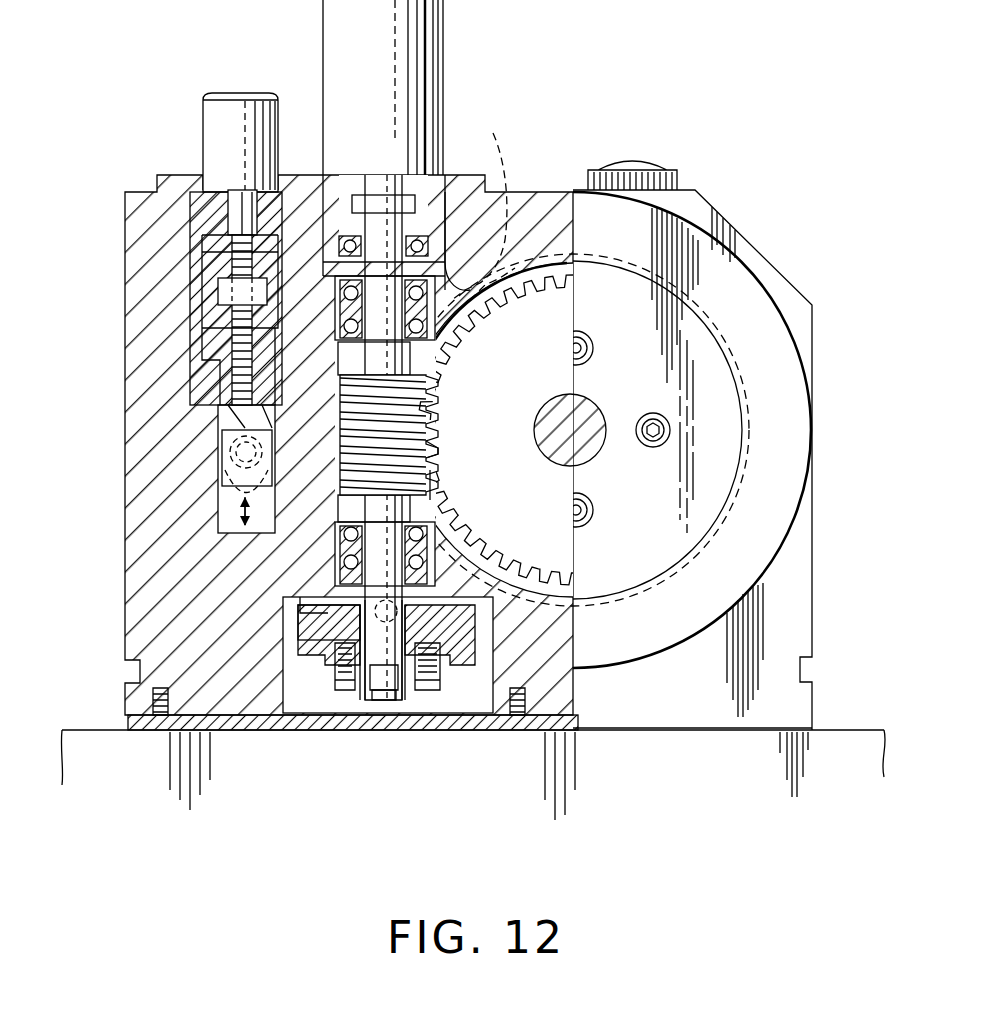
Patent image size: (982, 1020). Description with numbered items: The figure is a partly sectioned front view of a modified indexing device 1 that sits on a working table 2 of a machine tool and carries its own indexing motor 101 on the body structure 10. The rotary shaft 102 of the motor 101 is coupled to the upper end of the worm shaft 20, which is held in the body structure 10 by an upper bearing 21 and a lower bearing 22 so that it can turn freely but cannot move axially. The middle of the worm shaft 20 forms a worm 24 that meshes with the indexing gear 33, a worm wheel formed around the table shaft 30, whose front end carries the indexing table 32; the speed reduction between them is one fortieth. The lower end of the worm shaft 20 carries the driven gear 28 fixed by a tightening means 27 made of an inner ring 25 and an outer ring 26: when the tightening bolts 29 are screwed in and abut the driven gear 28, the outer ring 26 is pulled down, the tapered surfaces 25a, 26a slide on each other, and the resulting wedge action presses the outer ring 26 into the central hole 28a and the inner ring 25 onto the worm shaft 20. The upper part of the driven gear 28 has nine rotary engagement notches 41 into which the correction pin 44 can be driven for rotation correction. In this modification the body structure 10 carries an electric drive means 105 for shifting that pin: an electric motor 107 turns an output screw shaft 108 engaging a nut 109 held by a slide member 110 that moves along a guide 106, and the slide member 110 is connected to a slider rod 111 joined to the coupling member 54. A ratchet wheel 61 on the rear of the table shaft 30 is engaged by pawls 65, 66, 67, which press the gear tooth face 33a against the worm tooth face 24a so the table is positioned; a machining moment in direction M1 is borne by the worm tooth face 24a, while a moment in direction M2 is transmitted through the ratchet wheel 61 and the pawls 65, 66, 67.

The indexing device 1 is at (604, 417).
The working table 2 is at (850, 728).
The body structure 10 is at (135, 382).
The worm shaft 20 is at (455, 486).
The upper bearing 21 is at (436, 262).
The lower bearing 22 is at (436, 562).
The worm 24 is at (430, 377).
The worm tooth face 24a is at (430, 455).
The inner ring 25 is at (378, 668).
The tapered surface 25a is at (443, 752).
The outer ring 26 is at (338, 662).
The tapered surface 26a is at (387, 700).
The tightening means 27 is at (378, 777).
The driven gear 28 is at (413, 711).
The central hole 28a is at (390, 672).
The tightening bolts 29 is at (433, 686).
The table shaft 30 is at (600, 412).
The indexing table 32 is at (741, 268).
The indexing gear 33 is at (518, 268).
The gear tooth face 33a is at (430, 416).
The rotary engagement notches 41 is at (328, 606).
The correction pin 44 is at (377, 628).
The coupling member 54 is at (225, 455).
The ratchet wheel 61 is at (628, 258).
The pawl 65 is at (504, 202).
The pawl 66 is at (504, 202).
The pawl 67 is at (504, 202).
The indexing motor 101 is at (444, 52).
The rotary shaft 102 is at (375, 187).
The electric drive means 105 is at (166, 281).
The guide 106 is at (188, 209).
The electric motor 107 is at (240, 91).
The output screw shaft 108 is at (240, 263).
The nut 109 is at (243, 292).
The slide member 110 is at (207, 318).
The slider rod 111 is at (215, 481).
The moment direction M1 is at (845, 458).
The moment direction M2 is at (835, 346).